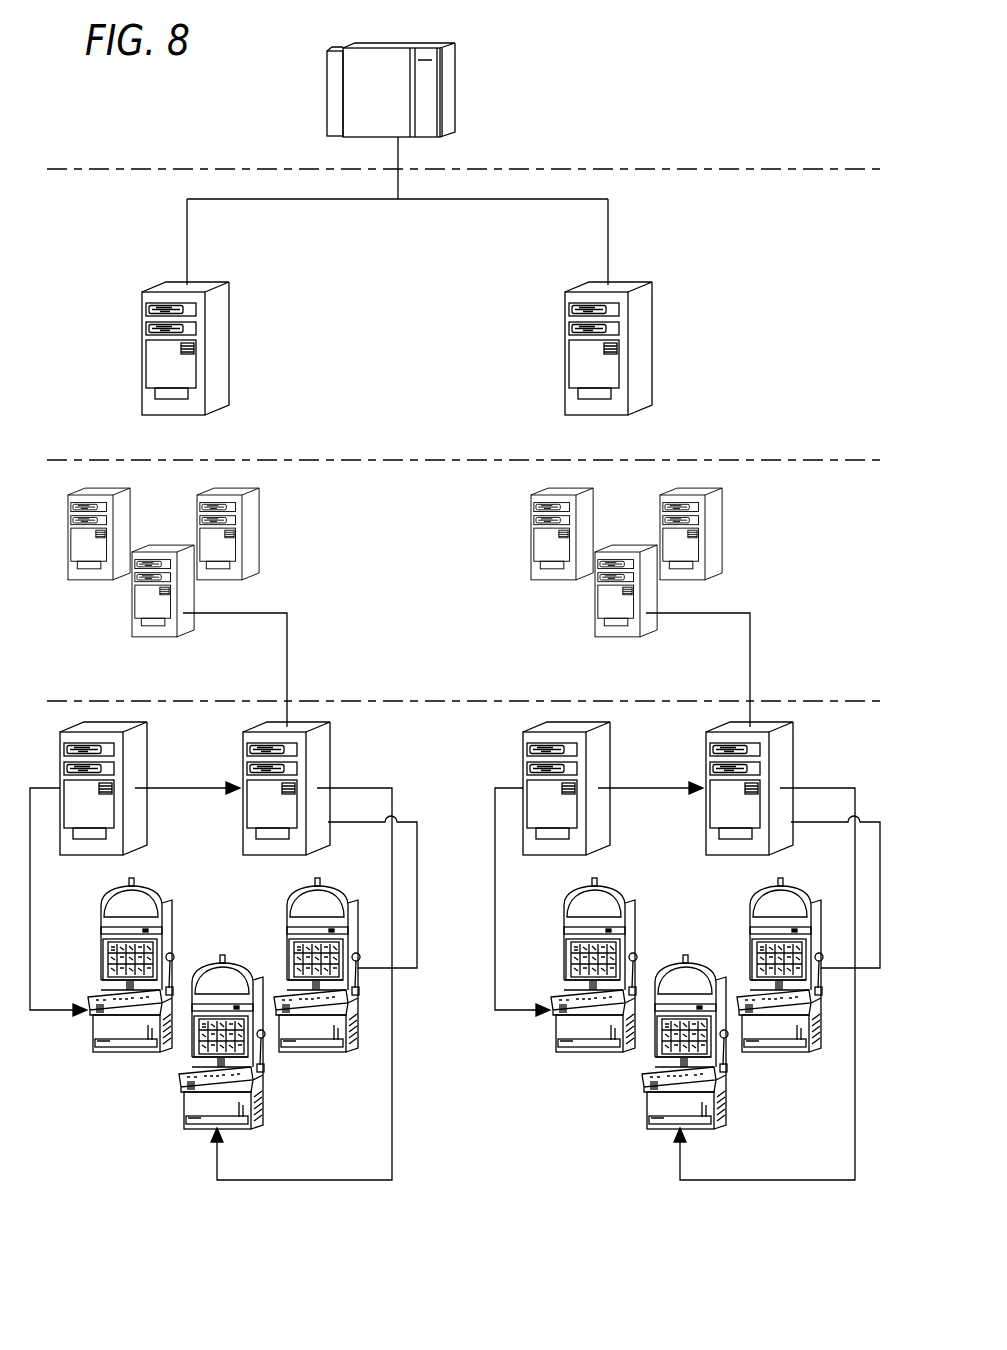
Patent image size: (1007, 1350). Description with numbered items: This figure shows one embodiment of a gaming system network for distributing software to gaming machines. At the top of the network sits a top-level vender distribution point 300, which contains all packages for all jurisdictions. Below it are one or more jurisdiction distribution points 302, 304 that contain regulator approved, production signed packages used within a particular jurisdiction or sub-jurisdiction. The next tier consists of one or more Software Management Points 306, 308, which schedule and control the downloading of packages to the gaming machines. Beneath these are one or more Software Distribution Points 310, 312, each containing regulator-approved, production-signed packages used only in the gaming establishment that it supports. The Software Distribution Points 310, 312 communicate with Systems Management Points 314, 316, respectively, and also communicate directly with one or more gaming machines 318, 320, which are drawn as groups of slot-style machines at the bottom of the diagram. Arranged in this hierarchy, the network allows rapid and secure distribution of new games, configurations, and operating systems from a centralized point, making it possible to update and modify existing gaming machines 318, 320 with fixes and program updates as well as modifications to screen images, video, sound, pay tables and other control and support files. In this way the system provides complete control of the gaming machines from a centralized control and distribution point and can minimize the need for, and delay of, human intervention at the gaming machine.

The top-level vender distribution point 300 is at (412, 44).
The jurisdiction distribution point 302 is at (142, 350).
The jurisdiction distribution point 304 is at (565, 355).
The Software Management Point 306 is at (263, 527).
The Software Management Point 308 is at (745, 530).
The Software Distribution Point 310 is at (347, 760).
The Software Distribution Point 312 is at (802, 759).
The Systems Management Point 314 is at (177, 788).
The Systems Management Point 316 is at (640, 788).
The gaming machines 318 is at (217, 1163).
The gaming machines 320 is at (680, 1163).